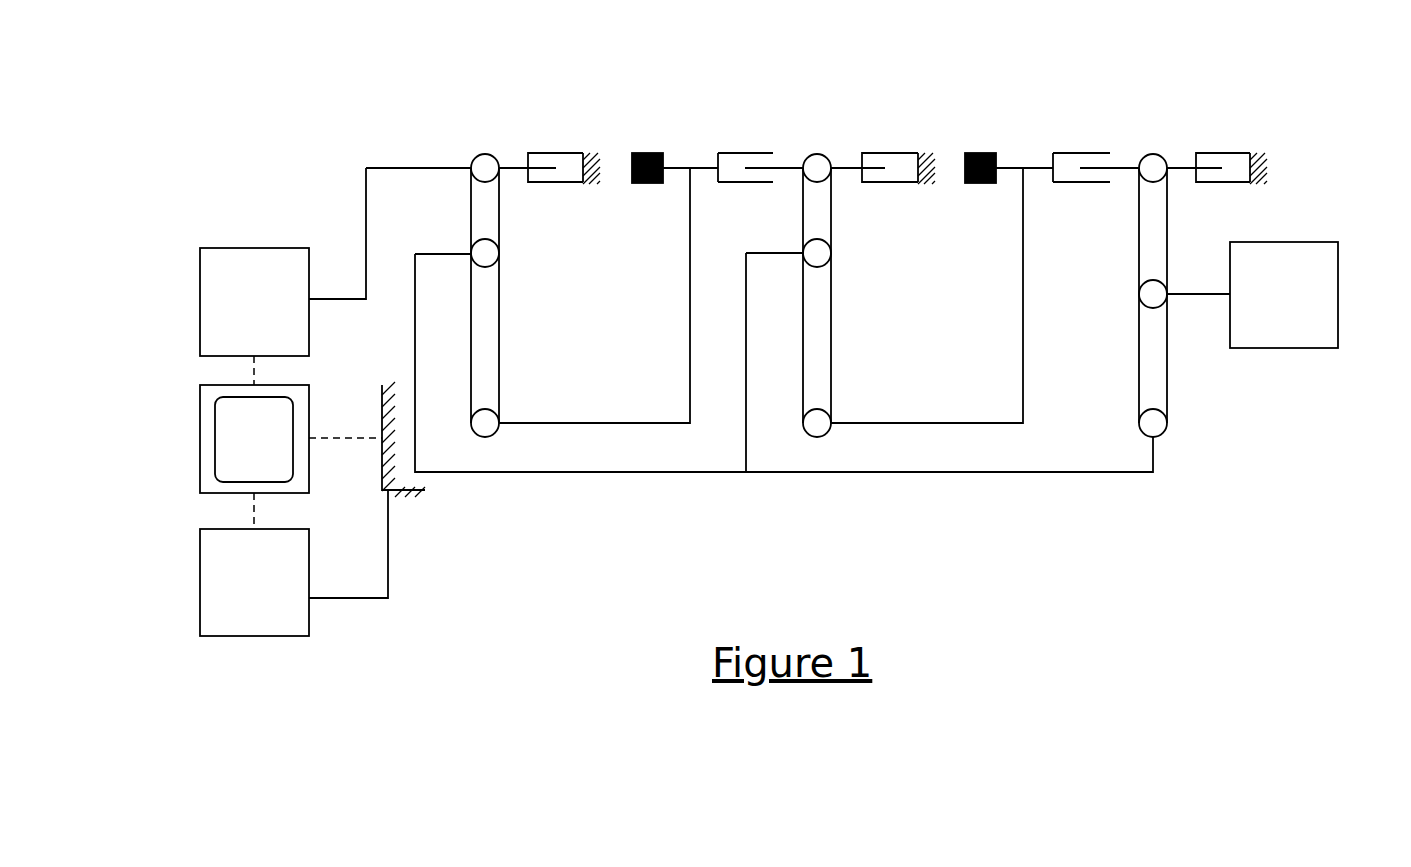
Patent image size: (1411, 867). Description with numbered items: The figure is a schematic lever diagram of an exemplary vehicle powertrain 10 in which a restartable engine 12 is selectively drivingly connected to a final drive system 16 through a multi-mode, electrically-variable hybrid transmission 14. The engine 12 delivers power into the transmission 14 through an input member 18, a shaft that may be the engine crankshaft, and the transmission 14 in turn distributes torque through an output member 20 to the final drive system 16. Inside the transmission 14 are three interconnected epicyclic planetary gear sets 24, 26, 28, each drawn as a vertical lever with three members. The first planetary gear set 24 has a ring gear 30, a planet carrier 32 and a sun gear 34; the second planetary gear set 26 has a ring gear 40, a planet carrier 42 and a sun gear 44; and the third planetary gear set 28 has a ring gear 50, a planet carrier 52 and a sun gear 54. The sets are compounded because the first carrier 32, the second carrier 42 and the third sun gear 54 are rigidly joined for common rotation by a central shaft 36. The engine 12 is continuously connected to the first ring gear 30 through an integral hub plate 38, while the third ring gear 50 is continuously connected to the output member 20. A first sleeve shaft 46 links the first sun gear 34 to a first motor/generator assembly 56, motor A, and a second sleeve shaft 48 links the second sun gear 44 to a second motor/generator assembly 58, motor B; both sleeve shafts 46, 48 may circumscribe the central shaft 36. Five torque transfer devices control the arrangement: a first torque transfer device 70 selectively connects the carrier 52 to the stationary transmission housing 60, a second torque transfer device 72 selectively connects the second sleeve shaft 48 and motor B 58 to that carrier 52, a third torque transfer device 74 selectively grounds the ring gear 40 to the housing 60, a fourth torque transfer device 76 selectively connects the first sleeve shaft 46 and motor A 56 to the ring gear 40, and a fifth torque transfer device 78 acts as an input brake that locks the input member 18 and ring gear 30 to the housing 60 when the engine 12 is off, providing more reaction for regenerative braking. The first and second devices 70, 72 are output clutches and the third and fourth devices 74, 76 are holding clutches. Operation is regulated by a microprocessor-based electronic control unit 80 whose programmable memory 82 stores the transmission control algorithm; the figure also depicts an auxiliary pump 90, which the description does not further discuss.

The vehicle powertrain system 10 is at (260, 128).
The restartable engine 12 is at (200, 313).
The multi-mode electrically-variable hybrid transmission 14 is at (695, 108).
The final drive system 16 is at (1338, 292).
The input member 18 is at (340, 298).
The transmission output member 20 is at (1191, 296).
The first planetary gear set 24 is at (552, 277).
The second planetary gear set 26 is at (884, 277).
The third planetary gear set 28 is at (1135, 277).
The first member of first planetary gear set 30 is at (485, 154).
The second member of first planetary gear set 32 is at (499, 255).
The third member of first planetary gear set 34 is at (488, 436).
The central shaft 36 is at (613, 473).
The integral hub plate 38 is at (408, 167).
The first member of second planetary gear set 40 is at (817, 154).
The second member of second planetary gear set 42 is at (832, 255).
The third member of second planetary gear set 44 is at (828, 436).
The first sleeve shaft 46 is at (649, 423).
The second sleeve shaft 48 is at (990, 423).
The first member of third planetary gear set 50 is at (1139, 293).
The second member of third planetary gear set 52 is at (1153, 154).
The third member of third planetary gear set 54 is at (1140, 426).
The first motor/generator assembly 56 is at (648, 185).
The second motor/generator assembly 58 is at (982, 185).
The transmission housing 60 is at (590, 150).
The first torque transfer device 70 is at (1253, 196).
The second torque transfer device 72 is at (1100, 138).
The third torque transfer device 74 is at (928, 196).
The fourth torque transfer device 76 is at (734, 128).
The fifth torque transfer device 78 is at (594, 196).
The electronic control unit 80 is at (200, 405).
The programmable memory 82 is at (215, 465).
The auxiliary pump 90 is at (200, 592).